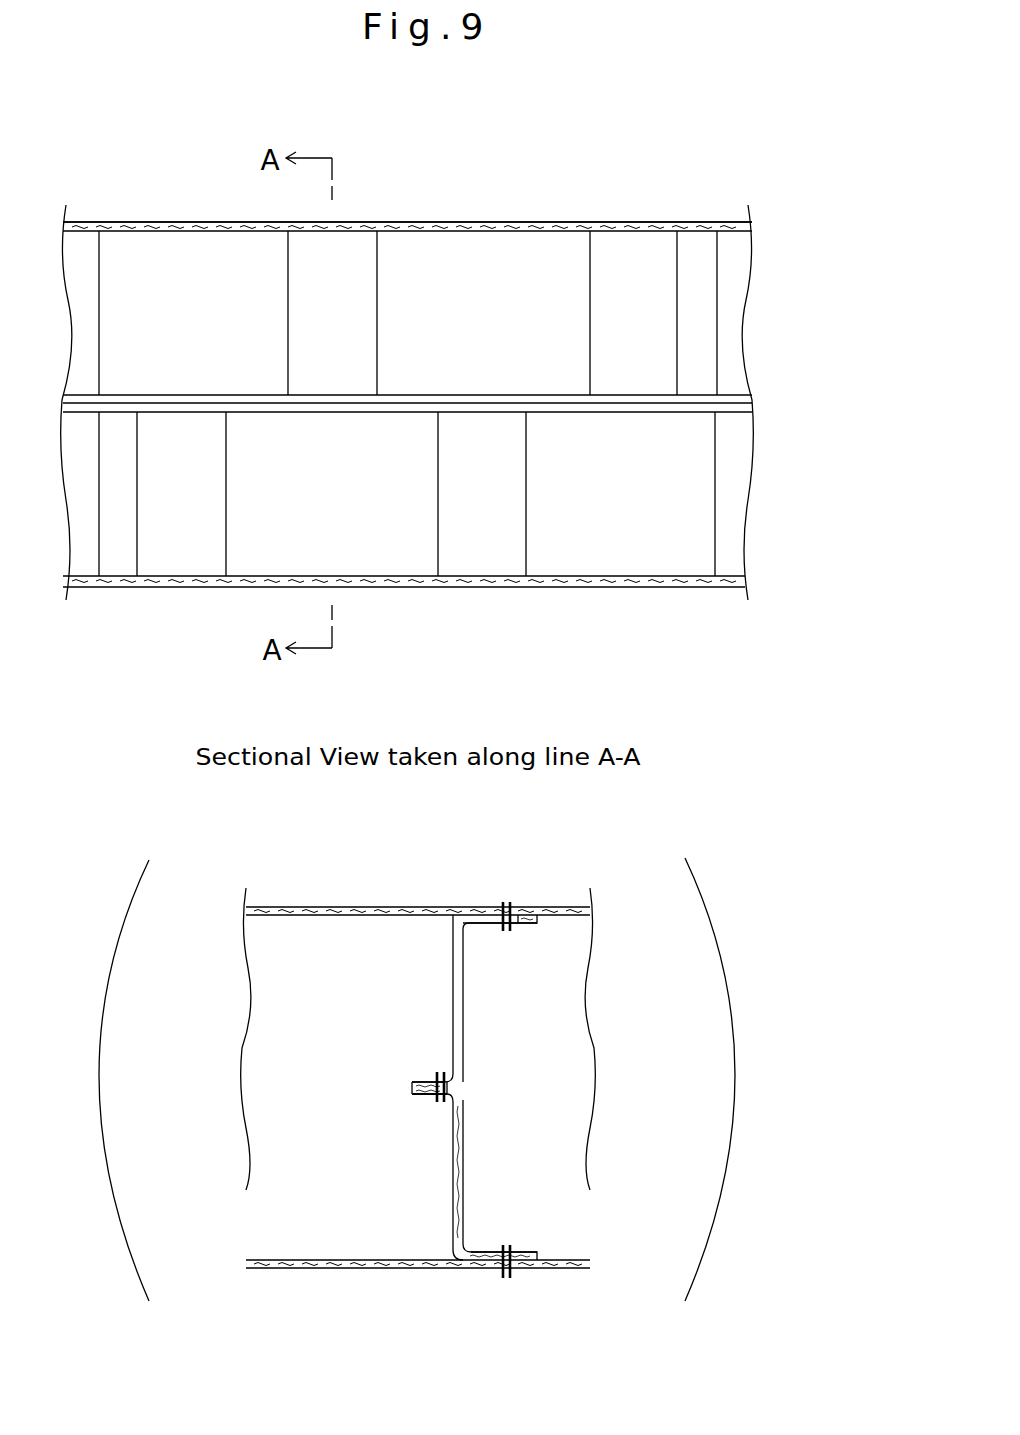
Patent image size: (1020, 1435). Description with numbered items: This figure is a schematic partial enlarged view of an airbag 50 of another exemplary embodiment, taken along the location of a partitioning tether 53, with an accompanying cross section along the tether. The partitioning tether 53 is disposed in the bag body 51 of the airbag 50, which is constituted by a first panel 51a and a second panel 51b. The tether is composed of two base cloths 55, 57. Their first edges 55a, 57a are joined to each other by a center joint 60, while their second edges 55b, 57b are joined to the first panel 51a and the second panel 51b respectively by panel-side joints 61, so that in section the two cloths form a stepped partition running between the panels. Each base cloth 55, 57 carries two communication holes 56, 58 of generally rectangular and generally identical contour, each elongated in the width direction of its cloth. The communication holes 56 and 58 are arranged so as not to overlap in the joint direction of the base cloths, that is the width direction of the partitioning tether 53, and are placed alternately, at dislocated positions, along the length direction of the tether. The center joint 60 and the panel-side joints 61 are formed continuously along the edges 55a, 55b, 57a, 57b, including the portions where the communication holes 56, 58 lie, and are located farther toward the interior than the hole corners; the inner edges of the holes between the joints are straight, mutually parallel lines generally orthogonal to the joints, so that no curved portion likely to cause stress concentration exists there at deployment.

The airbag 50 is at (608, 202).
The bag body 51 is at (83, 198).
The first panel 51a is at (133, 221).
The second panel 51b is at (127, 588).
The partitioning tether 53 is at (848, 337).
The base cloth 55 is at (736, 346).
The first edge 55a is at (412, 1084).
The second edge 55b is at (538, 923).
The communication hole 56 is at (357, 247).
The base cloth 57 is at (739, 456).
The first edge 57a is at (415, 1095).
The second edge 57b is at (538, 1256).
The communication hole 58 is at (194, 562).
The center joint 60 is at (440, 1054).
The panel-side joint 61 is at (522, 890).